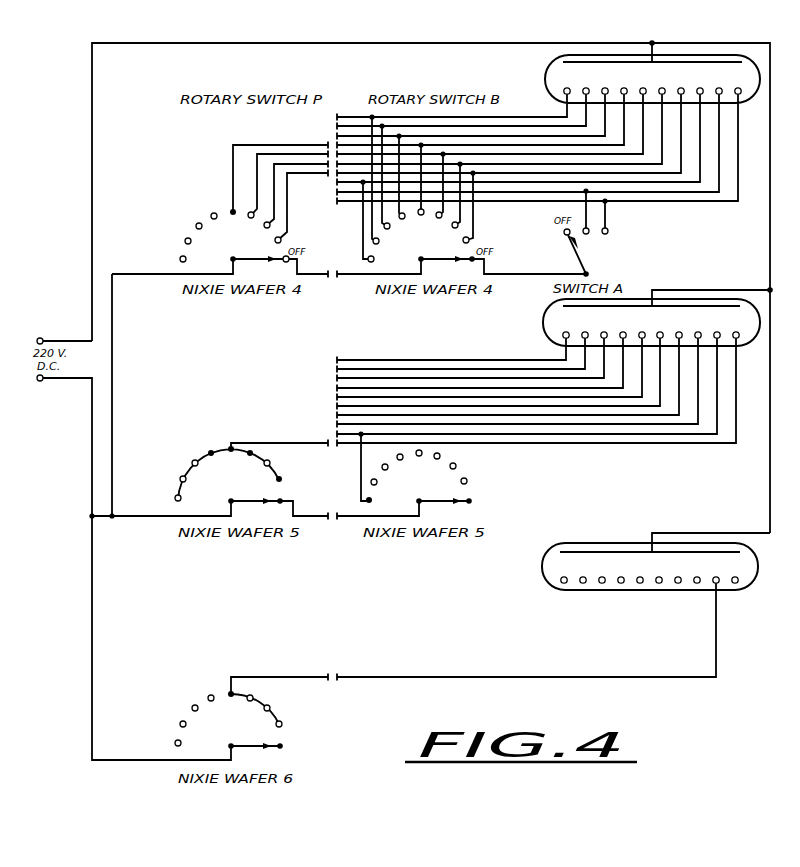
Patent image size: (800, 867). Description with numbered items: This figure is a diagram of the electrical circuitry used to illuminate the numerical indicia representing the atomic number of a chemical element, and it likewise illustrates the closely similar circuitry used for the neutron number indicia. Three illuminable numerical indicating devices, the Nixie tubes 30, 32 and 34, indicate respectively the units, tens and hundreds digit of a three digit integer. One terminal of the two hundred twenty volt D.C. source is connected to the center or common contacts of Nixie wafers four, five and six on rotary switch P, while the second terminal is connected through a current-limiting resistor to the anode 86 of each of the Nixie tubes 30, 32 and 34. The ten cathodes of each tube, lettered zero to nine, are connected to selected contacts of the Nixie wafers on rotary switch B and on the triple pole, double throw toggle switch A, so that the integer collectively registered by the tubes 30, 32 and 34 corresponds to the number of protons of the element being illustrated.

The Nixie tube 30 is at (553, 72).
The Nixie tube 32 is at (743, 338).
The Nixie tube 34 is at (745, 584).
The anode 86 is at (676, 62).